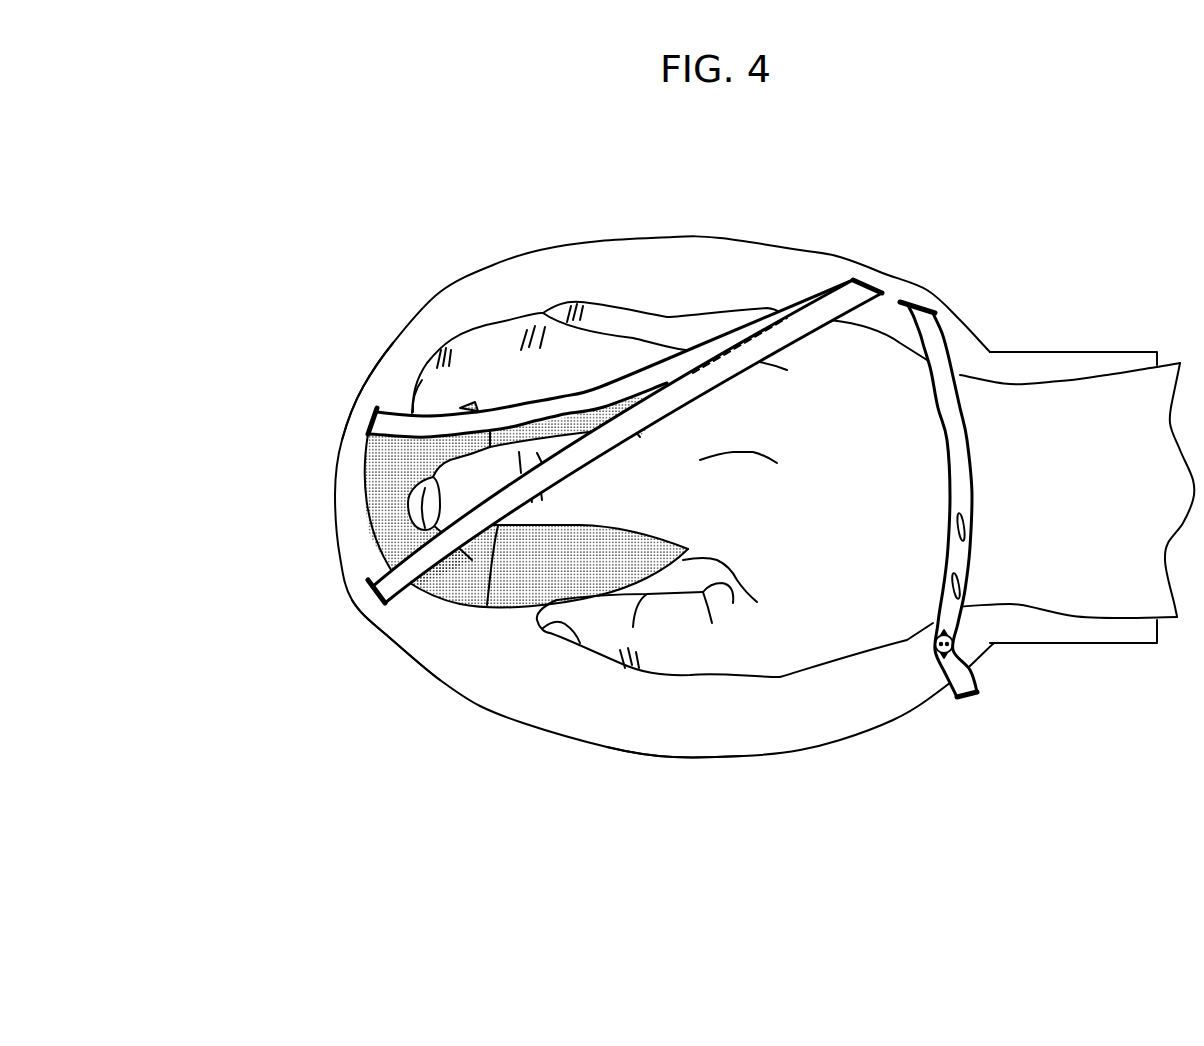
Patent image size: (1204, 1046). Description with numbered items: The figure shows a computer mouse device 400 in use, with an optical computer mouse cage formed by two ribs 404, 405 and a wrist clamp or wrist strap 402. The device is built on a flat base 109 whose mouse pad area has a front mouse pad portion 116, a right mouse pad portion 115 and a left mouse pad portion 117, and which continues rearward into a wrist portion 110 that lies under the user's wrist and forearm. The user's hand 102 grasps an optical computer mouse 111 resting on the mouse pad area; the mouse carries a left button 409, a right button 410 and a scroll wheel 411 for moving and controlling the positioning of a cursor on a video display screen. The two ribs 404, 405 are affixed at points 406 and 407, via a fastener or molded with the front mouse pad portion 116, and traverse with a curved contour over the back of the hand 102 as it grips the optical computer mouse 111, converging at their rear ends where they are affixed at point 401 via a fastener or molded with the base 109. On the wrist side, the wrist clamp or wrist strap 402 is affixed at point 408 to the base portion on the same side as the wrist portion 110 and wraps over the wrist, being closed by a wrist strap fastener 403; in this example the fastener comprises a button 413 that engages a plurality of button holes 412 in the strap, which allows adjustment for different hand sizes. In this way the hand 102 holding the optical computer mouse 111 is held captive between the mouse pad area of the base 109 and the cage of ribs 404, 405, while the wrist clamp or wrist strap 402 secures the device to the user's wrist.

The computer mouse device 400 is at (639, 423).
The rib affixing point to base 401 is at (860, 276).
The wrist clamp or wrist strap 402 is at (972, 492).
The wrist strap fastener 403 is at (933, 650).
The rib 404 is at (567, 473).
The rib 405 is at (525, 408).
The rib affixing point to front mouse pad portion 406 is at (370, 423).
The rib affixing point to front mouse pad portion 407 is at (372, 590).
The wrist strap affixing point 408 is at (925, 287).
The left button 409 is at (387, 543).
The right button 410 is at (385, 473).
The scroll wheel 411 is at (413, 503).
The button holes 412 is at (962, 582).
The button 413 is at (953, 650).
The hand 102 is at (682, 648).
The base 109 is at (400, 635).
The wrist portion 110 is at (1095, 607).
The optical computer mouse 111 is at (502, 612).
The right mouse pad portion 115 is at (600, 241).
The front mouse pad portion 116 is at (363, 387).
The left mouse pad portion 117 is at (620, 753).